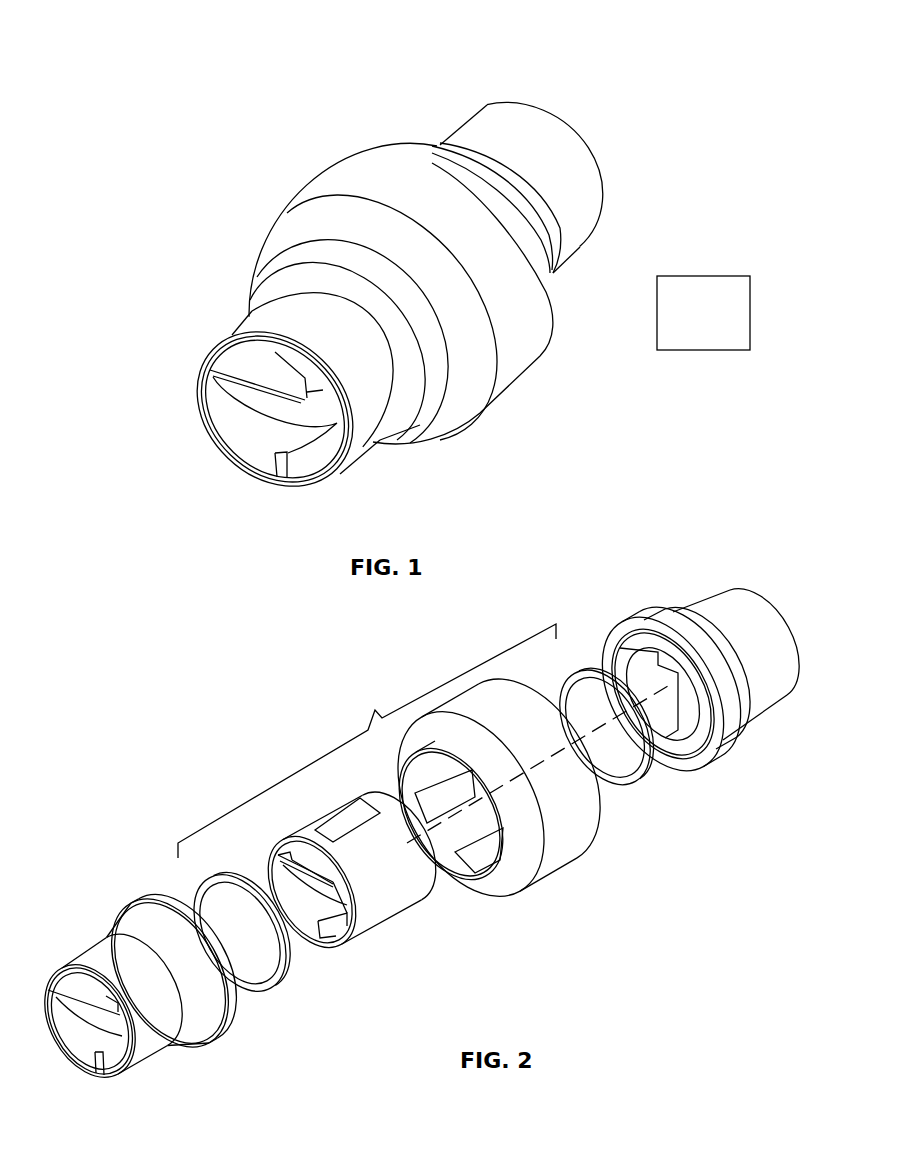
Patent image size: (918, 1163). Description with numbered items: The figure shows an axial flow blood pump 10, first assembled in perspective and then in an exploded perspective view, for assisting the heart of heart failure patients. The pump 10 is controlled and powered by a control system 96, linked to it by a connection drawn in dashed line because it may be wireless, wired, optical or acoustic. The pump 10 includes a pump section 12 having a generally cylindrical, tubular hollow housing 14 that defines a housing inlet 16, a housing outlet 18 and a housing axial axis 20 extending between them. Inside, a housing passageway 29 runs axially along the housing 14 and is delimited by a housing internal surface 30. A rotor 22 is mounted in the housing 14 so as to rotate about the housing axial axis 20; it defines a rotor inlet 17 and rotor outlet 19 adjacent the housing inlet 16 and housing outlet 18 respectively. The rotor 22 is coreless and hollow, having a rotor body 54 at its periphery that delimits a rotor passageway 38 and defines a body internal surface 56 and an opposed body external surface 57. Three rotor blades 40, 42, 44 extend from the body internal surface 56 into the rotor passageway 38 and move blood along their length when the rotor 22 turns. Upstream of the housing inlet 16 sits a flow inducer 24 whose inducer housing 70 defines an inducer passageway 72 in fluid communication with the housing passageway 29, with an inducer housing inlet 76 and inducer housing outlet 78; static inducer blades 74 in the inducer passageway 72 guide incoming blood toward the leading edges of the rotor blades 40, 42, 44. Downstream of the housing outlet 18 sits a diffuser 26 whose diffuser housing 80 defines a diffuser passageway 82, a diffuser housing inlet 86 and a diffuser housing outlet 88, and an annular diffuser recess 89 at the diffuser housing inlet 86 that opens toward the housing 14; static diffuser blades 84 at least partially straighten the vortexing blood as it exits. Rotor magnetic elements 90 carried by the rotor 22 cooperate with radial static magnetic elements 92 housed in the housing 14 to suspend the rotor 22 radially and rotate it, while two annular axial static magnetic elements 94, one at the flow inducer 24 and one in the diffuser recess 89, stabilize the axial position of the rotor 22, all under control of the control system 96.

In FIG. 1, the axial flow blood pump 10 is at (172, 82).
In FIG. 2, the axial flow blood pump 10 is at (200, 708).
In FIG. 1, the pump section 12 is at (318, 137).
In FIG. 2, the pump section 12 is at (367, 741).
In FIG. 2, the housing 14 is at (506, 821).
In FIG. 2, the housing inlet 16 is at (477, 887).
In FIG. 2, the rotor inlet 17 is at (268, 868).
In FIG. 2, the housing outlet 18 is at (607, 790).
In FIG. 2, the rotor outlet 19 is at (377, 792).
In FIG. 2, the housing axial axis 20 is at (553, 757).
In FIG. 2, the rotor 22 is at (335, 889).
In FIG. 1, the flow inducer 24 is at (216, 325).
In FIG. 2, the flow inducer 24 is at (186, 978).
In FIG. 1, the diffuser 26 is at (462, 102).
In FIG. 2, the diffuser 26 is at (695, 665).
In FIG. 2, the housing passageway 29 is at (405, 787).
In FIG. 2, the housing internal surface 30 is at (416, 748).
In FIG. 2, the rotor passageway 38 is at (280, 895).
In FIG. 2, the rotor blade 40 is at (287, 857).
In FIG. 2, the rotor blade 42 is at (333, 883).
In FIG. 2, the rotor blade 44 is at (330, 930).
In FIG. 2, the rotor body 54 is at (380, 913).
In FIG. 2, the body internal surface 56 is at (312, 884).
In FIG. 2, the body external surface 57 is at (374, 872).
In FIG. 2, the inducer housing 70 is at (218, 1015).
In FIG. 2, the inducer passageway 72 is at (100, 1033).
In FIG. 2, the inducer blades 74 is at (110, 1007).
In FIG. 2, the inducer housing inlet 76 is at (117, 1050).
In FIG. 2, the inducer housing outlet 78 is at (233, 1005).
In FIG. 2, the diffuser housing 80 is at (740, 607).
In FIG. 2, the diffuser passageway 82 is at (683, 740).
In FIG. 2, the diffuser blades 84 is at (638, 693).
In FIG. 2, the diffuser housing inlet 86 is at (695, 765).
In FIG. 2, the diffuser housing outlet 88 is at (787, 657).
In FIG. 2, the diffuser recess 89 is at (407, 770).
In FIG. 2, the rotor magnetic elements 90 is at (353, 817).
In FIG. 2, the radial static magnetic elements 92 is at (443, 795).
In FIG. 2, the axial static magnetic elements 94 is at (285, 968).
In FIG. 1, the control system 96 is at (540, 330).